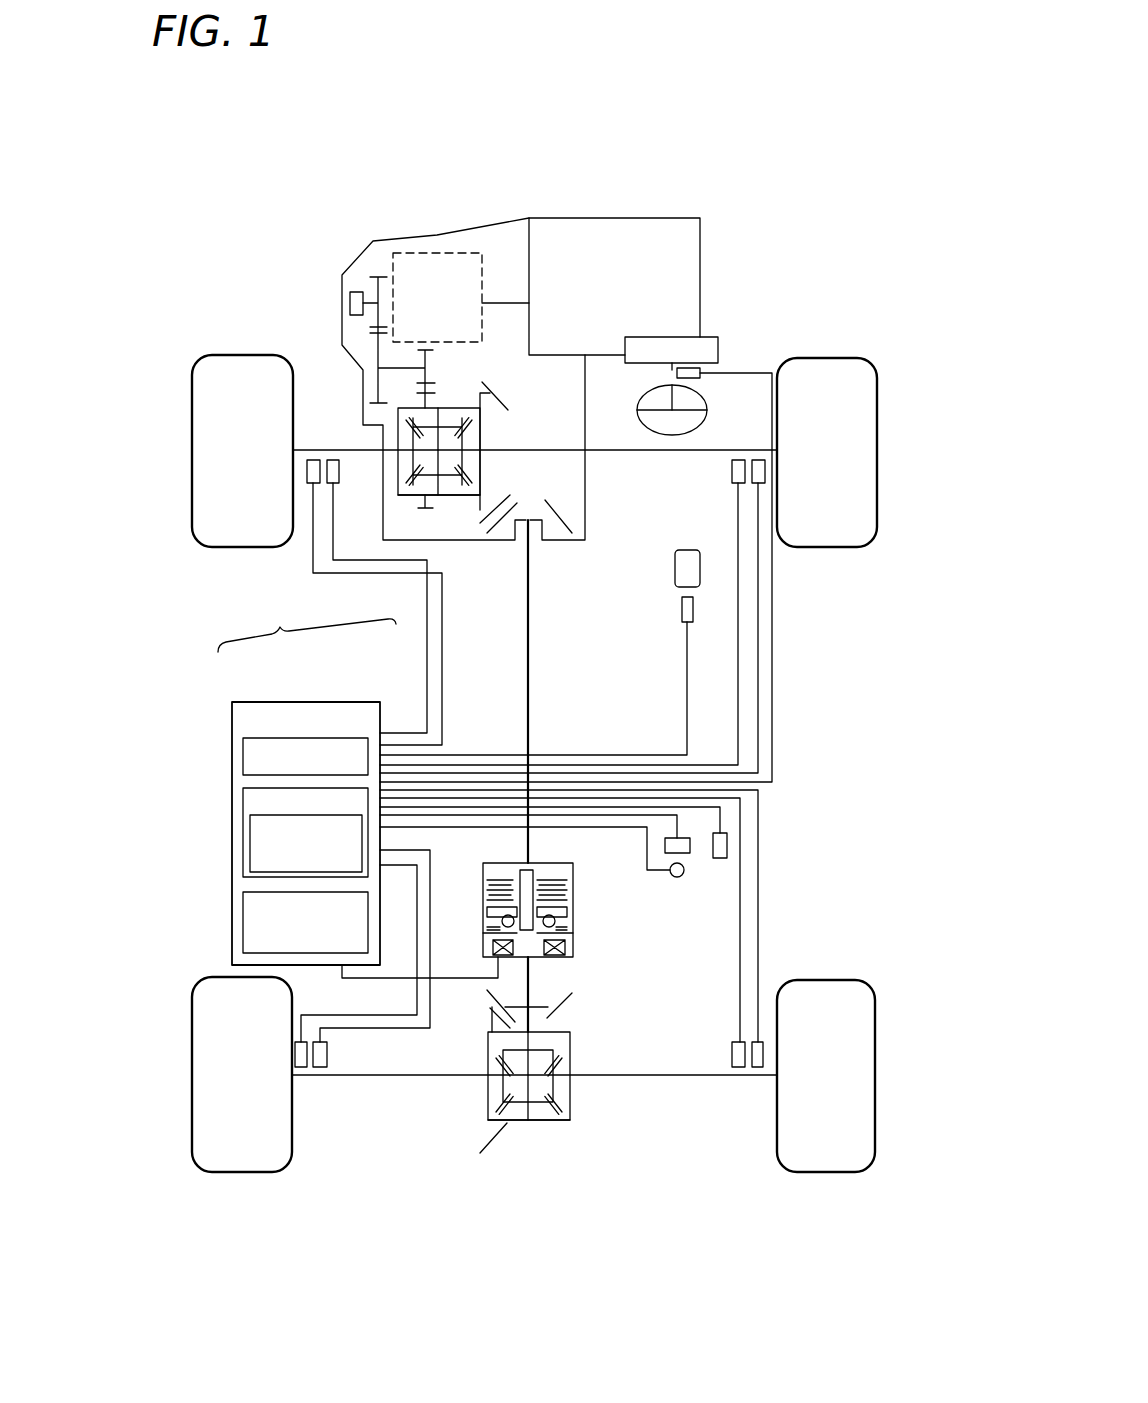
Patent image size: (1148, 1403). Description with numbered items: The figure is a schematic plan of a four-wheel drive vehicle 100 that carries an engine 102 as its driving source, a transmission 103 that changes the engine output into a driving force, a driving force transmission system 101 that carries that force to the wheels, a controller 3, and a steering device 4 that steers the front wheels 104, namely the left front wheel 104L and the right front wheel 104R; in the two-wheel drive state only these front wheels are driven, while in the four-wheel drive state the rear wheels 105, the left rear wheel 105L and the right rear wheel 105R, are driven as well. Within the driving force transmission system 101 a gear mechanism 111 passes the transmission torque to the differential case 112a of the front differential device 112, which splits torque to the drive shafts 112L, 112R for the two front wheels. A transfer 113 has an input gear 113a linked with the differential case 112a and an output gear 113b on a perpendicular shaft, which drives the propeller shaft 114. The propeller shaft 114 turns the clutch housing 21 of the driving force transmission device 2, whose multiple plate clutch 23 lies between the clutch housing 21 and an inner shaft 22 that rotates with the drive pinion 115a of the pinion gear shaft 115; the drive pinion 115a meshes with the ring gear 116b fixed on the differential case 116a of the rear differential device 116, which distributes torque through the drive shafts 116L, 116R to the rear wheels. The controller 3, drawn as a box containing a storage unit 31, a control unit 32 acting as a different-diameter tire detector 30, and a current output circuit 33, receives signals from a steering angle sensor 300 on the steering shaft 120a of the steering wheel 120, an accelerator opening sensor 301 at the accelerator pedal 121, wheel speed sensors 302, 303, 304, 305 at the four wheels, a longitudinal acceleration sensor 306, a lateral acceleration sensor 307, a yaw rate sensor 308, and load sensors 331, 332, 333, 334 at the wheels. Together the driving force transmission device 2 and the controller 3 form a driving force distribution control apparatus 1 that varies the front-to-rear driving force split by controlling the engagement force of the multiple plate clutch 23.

The four-wheel drive vehicle 100 is at (701, 97).
The driving force transmission system 101 is at (347, 252).
The engine 102 is at (657, 218).
The transmission 103 is at (427, 250).
The front wheels 104 is at (188, 398).
The left front wheel 104L is at (253, 354).
The right front wheel 104R is at (845, 358).
The rear wheels 105 is at (188, 985).
The left rear wheel 105L is at (257, 1173).
The right rear wheel 105R is at (805, 1172).
The gear mechanism 111 is at (357, 328).
The front differential device 112 is at (452, 500).
The differential case 112a is at (413, 497).
The drive shaft 112L is at (357, 449).
The drive shaft 112R is at (713, 449).
The transfer 113 is at (552, 442).
The input gear 113a is at (510, 402).
The output gear 113b is at (547, 507).
The propeller shaft 114 is at (525, 668).
The pinion gear shaft 115 is at (530, 970).
The drive pinion 115a is at (563, 1003).
The rear differential device 116 is at (585, 1112).
The differential case 116a is at (540, 1122).
The ring gear 116b is at (483, 1003).
The drive shaft 116L is at (337, 1078).
The drive shaft 116R is at (663, 1077).
The steering wheel 120 is at (640, 428).
The steering shaft 120a is at (670, 372).
The accelerator pedal 121 is at (688, 548).
The driving force distribution control apparatus 1 is at (307, 628).
The driving force transmission device 2 is at (507, 863).
The controller 3 is at (253, 702).
The steering device 4 is at (682, 337).
The clutch housing 21 is at (492, 863).
The inner shaft 22 is at (525, 902).
The multiple plate clutch 23 is at (581, 884).
The different-diameter tire detector 30 is at (250, 850).
The storage unit 31 is at (243, 752).
The control unit 32 is at (243, 810).
The current output circuit 33 is at (243, 925).
The steering angle sensor 300 is at (701, 372).
The accelerator opening sensor 301 is at (693, 612).
The wheel speed sensor 302 is at (339, 480).
The wheel speed sensor 303 is at (732, 474).
The wheel speed sensor 304 is at (327, 1051).
The wheel speed sensor 305 is at (731, 1051).
The longitudinal acceleration sensor 306 is at (728, 842).
The lateral acceleration sensor 307 is at (688, 853).
The yaw rate sensor 308 is at (680, 878).
The load sensor 331 is at (307, 482).
The load sensor 332 is at (765, 485).
The load sensor 333 is at (302, 1068).
The load sensor 334 is at (756, 1068).